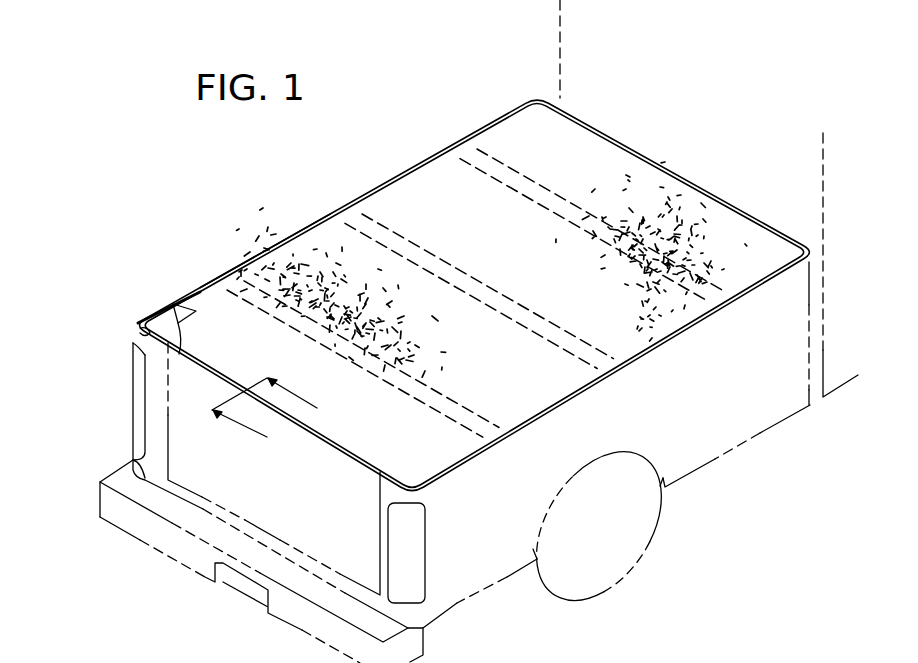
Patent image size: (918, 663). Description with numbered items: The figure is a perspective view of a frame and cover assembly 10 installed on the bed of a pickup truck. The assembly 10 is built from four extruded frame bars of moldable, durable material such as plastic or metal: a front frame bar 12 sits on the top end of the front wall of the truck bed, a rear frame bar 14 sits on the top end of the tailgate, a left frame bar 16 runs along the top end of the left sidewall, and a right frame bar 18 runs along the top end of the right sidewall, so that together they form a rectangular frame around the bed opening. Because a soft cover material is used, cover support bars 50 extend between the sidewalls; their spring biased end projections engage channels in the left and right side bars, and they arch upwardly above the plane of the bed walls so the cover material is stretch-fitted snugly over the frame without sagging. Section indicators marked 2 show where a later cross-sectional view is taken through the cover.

The frame and cover assembly 10 is at (383, 129).
The front frame bar 12 is at (650, 161).
The rear frame bar 14 is at (136, 336).
The left frame bar 16 is at (267, 250).
The right frame bar 18 is at (606, 395).
The cover support bars 50 is at (517, 173).
The section line 2- 2 is at (274, 418).